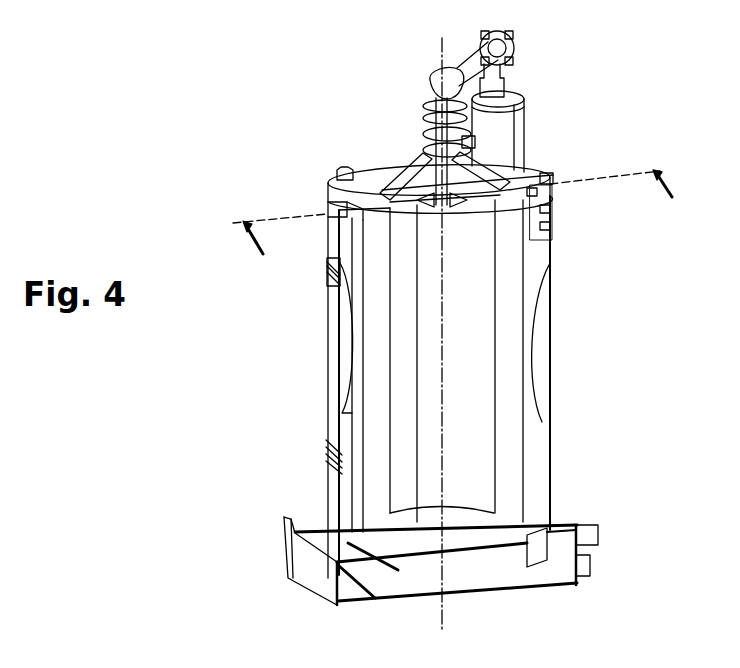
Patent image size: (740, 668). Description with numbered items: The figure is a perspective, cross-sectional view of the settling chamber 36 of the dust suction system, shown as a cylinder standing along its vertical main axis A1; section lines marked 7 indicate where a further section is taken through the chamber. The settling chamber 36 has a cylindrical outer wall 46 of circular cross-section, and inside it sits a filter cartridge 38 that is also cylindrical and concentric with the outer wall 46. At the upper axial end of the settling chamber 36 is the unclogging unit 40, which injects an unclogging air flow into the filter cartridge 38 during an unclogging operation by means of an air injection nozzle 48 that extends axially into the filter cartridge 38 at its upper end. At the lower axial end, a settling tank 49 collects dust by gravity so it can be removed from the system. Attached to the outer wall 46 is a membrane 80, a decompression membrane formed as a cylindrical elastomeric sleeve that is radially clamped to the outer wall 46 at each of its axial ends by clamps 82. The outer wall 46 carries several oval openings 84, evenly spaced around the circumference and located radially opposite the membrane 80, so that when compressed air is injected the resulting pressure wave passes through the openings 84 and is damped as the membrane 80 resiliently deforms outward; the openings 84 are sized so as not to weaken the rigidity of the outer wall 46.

The section line 7- 7 is at (452, 224).
The settling chamber 36 is at (326, 173).
The filter cartridge 38 is at (353, 500).
The unclogging unit 40 is at (463, 56).
The cylindrical outer wall 46 is at (333, 243).
The air injection nozzle 48 is at (464, 208).
The settling tank 49 is at (543, 563).
The membrane 80 is at (330, 311).
The clamps 82 is at (333, 268).
The openings 84 is at (347, 347).
The main axis A1 is at (448, 606).